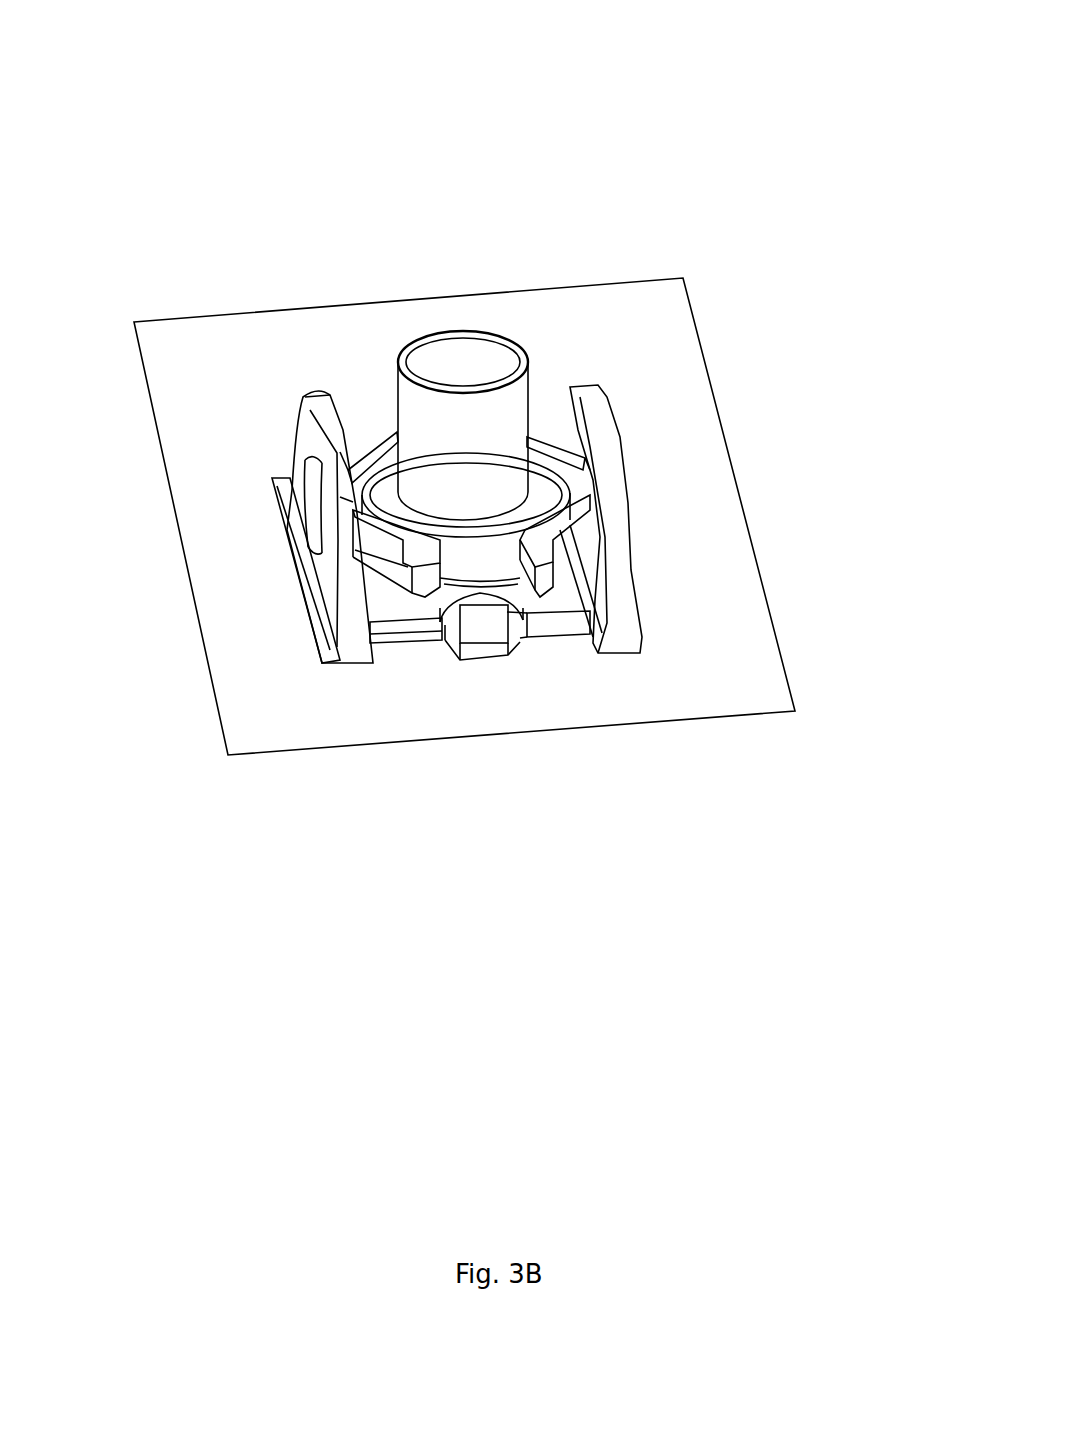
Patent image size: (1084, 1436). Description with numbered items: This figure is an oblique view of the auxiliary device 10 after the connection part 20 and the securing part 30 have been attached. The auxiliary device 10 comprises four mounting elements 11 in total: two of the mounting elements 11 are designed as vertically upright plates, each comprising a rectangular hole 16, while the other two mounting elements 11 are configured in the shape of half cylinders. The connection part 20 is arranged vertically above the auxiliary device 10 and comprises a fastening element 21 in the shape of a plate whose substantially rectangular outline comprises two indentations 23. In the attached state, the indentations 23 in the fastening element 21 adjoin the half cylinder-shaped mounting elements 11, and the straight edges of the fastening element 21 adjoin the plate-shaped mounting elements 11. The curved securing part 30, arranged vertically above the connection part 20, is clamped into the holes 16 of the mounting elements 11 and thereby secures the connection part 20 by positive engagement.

The auxiliary device 10 is at (203, 400).
The connection part 20 is at (407, 322).
The securing part 30 is at (547, 420).
The mounting elements 11 is at (607, 422).
The rectangular hole 16 is at (305, 555).
The fastening element 21 is at (409, 598).
The indentations 23 is at (433, 660).